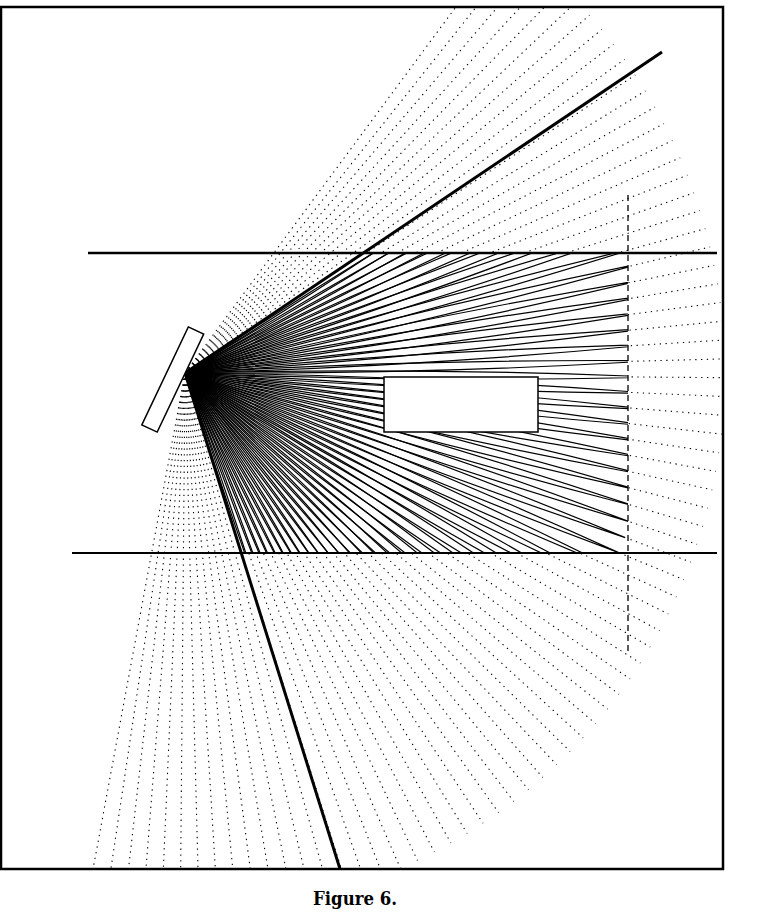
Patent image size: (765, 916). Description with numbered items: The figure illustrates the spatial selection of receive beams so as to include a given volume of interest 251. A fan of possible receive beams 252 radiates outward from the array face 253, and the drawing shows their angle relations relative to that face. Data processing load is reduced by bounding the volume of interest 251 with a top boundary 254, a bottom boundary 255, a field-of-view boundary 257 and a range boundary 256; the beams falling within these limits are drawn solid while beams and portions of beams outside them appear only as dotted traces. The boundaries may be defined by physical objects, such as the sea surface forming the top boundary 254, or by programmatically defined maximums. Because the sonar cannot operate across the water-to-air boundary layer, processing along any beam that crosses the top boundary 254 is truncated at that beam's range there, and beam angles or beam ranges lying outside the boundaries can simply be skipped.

The volume of interest 251 is at (461, 404).
The possible receive beams 252 is at (383, 175).
The array face 253 is at (170, 377).
The top boundary 254 is at (205, 251).
The bottom boundary 255 is at (195, 556).
The range boundary 256 is at (626, 586).
The field-of-view boundary 257 is at (280, 663).